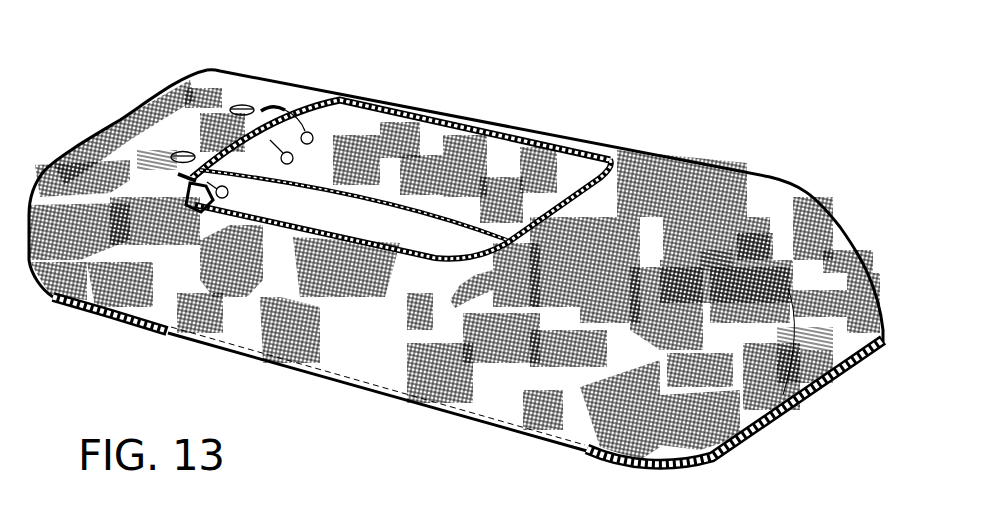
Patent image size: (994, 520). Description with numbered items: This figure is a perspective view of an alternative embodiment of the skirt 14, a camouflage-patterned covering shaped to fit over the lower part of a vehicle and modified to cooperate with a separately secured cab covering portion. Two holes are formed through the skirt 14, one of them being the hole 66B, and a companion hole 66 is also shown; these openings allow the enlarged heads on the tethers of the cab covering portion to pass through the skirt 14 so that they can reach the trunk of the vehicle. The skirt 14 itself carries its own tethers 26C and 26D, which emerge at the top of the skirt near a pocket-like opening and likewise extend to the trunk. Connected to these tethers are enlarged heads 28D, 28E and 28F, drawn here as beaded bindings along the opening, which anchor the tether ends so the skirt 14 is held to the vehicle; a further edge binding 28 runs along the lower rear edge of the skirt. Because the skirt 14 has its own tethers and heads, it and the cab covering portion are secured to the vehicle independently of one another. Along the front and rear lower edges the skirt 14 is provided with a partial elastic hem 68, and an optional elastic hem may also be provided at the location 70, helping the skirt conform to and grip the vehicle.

The skirt 14 is at (682, 107).
The tether 26C is at (268, 110).
The tether 26D is at (200, 172).
The elastic edge binding 28 is at (740, 448).
The enlarged head 28D is at (265, 172).
The enlarged head 28E is at (318, 138).
The enlarged head 28F is at (230, 213).
The grommet 66 is at (247, 103).
The hole 66B is at (170, 152).
The partial elastic hem 68 is at (82, 318).
The optional elastic hem location 70 is at (368, 226).